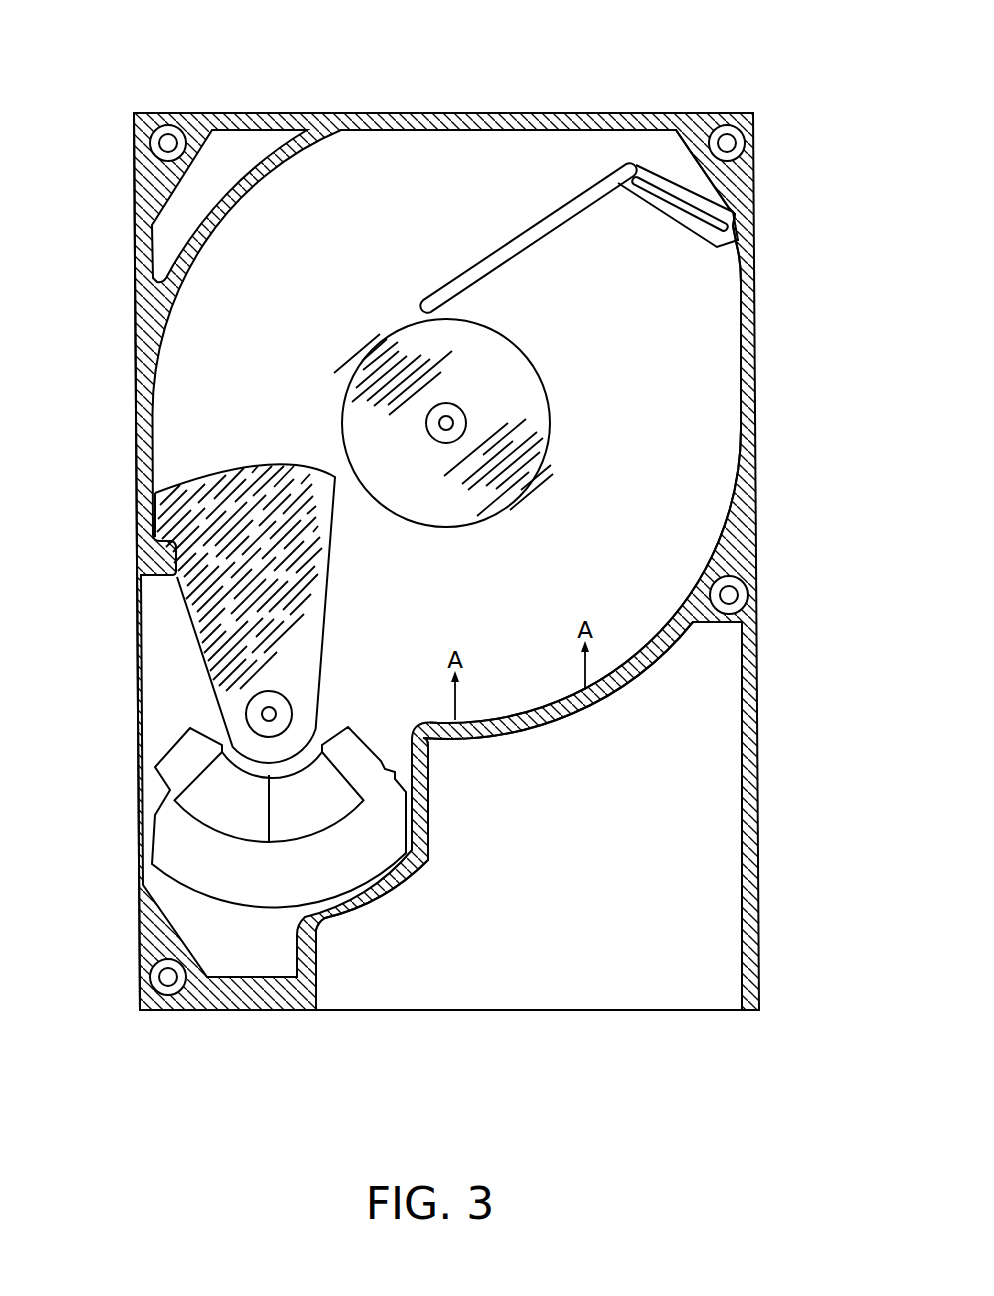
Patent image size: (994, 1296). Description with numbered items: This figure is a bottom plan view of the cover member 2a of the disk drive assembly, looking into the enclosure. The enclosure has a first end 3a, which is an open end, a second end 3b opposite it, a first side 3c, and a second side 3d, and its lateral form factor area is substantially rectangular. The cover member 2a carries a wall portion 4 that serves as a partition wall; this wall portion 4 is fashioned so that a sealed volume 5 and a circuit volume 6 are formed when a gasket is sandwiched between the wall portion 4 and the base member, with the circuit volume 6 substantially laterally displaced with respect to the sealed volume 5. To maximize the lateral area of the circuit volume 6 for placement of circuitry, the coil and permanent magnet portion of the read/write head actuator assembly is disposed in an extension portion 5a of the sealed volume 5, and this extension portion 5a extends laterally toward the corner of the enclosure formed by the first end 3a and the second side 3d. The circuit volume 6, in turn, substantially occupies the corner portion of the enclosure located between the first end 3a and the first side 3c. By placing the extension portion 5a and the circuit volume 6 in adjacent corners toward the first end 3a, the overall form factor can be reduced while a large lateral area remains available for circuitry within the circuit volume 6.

The cover member 2a is at (578, 62).
The first end 3a is at (368, 1012).
The second end 3b is at (428, 113).
The first side 3c is at (757, 596).
The second side 3d is at (137, 556).
The wall portion 4 is at (337, 113).
The sealed volume 5 is at (245, 346).
The extension portion 5a is at (275, 883).
The circuit volume 6 is at (604, 875).